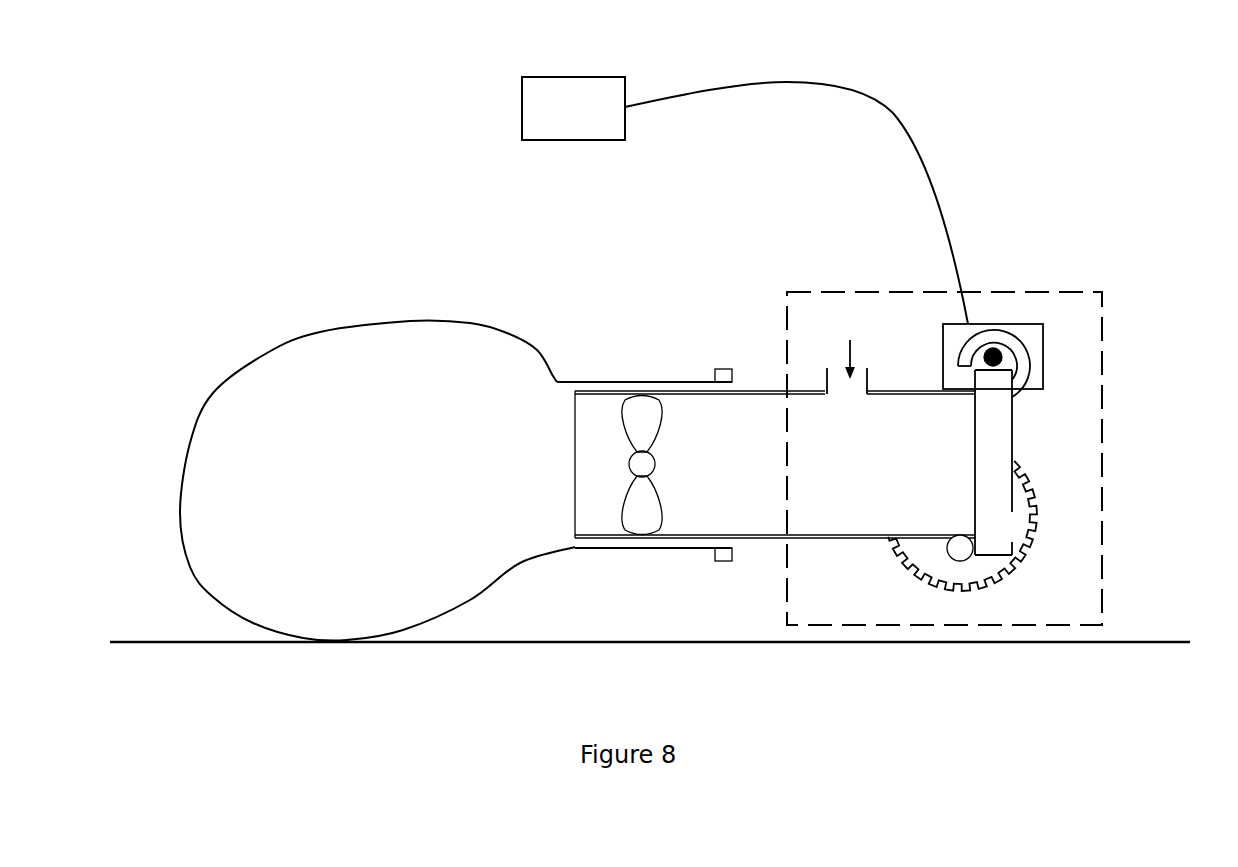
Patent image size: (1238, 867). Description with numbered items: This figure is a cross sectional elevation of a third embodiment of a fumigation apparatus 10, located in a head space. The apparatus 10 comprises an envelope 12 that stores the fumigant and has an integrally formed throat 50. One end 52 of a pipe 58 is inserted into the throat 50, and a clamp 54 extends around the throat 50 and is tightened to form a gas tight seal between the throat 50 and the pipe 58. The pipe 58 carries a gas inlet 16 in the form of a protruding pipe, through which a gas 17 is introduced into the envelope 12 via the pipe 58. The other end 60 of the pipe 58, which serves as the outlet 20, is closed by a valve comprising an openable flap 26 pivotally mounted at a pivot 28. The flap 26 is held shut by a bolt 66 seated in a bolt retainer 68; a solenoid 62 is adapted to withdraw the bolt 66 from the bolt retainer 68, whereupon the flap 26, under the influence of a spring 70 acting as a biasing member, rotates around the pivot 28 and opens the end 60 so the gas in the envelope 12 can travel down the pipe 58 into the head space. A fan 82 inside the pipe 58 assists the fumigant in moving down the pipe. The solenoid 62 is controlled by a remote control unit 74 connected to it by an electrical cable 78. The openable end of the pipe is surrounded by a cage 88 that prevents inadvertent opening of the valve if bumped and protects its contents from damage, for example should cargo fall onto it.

The fumigation apparatus 10 is at (1024, 175).
The envelope 12 is at (182, 516).
The gas inlet 16 is at (827, 370).
The gas 17 is at (852, 348).
The outlet 20 is at (975, 457).
The flap 26 is at (1013, 430).
The pivot 28 is at (962, 552).
The throat 50 is at (688, 548).
The end of pipe 52 is at (588, 510).
The clamp 54 is at (717, 370).
The pipe 58 is at (725, 412).
The end of pipe 60 is at (935, 427).
The solenoid 62 is at (1007, 323).
The bolt 66 is at (1002, 351).
The bolt retainer 68 is at (1012, 364).
The spring 70 is at (1035, 487).
The remote control unit 74 is at (572, 77).
The electrical cable 78 is at (900, 118).
The fan 82 is at (644, 515).
The cage 88 is at (1102, 558).